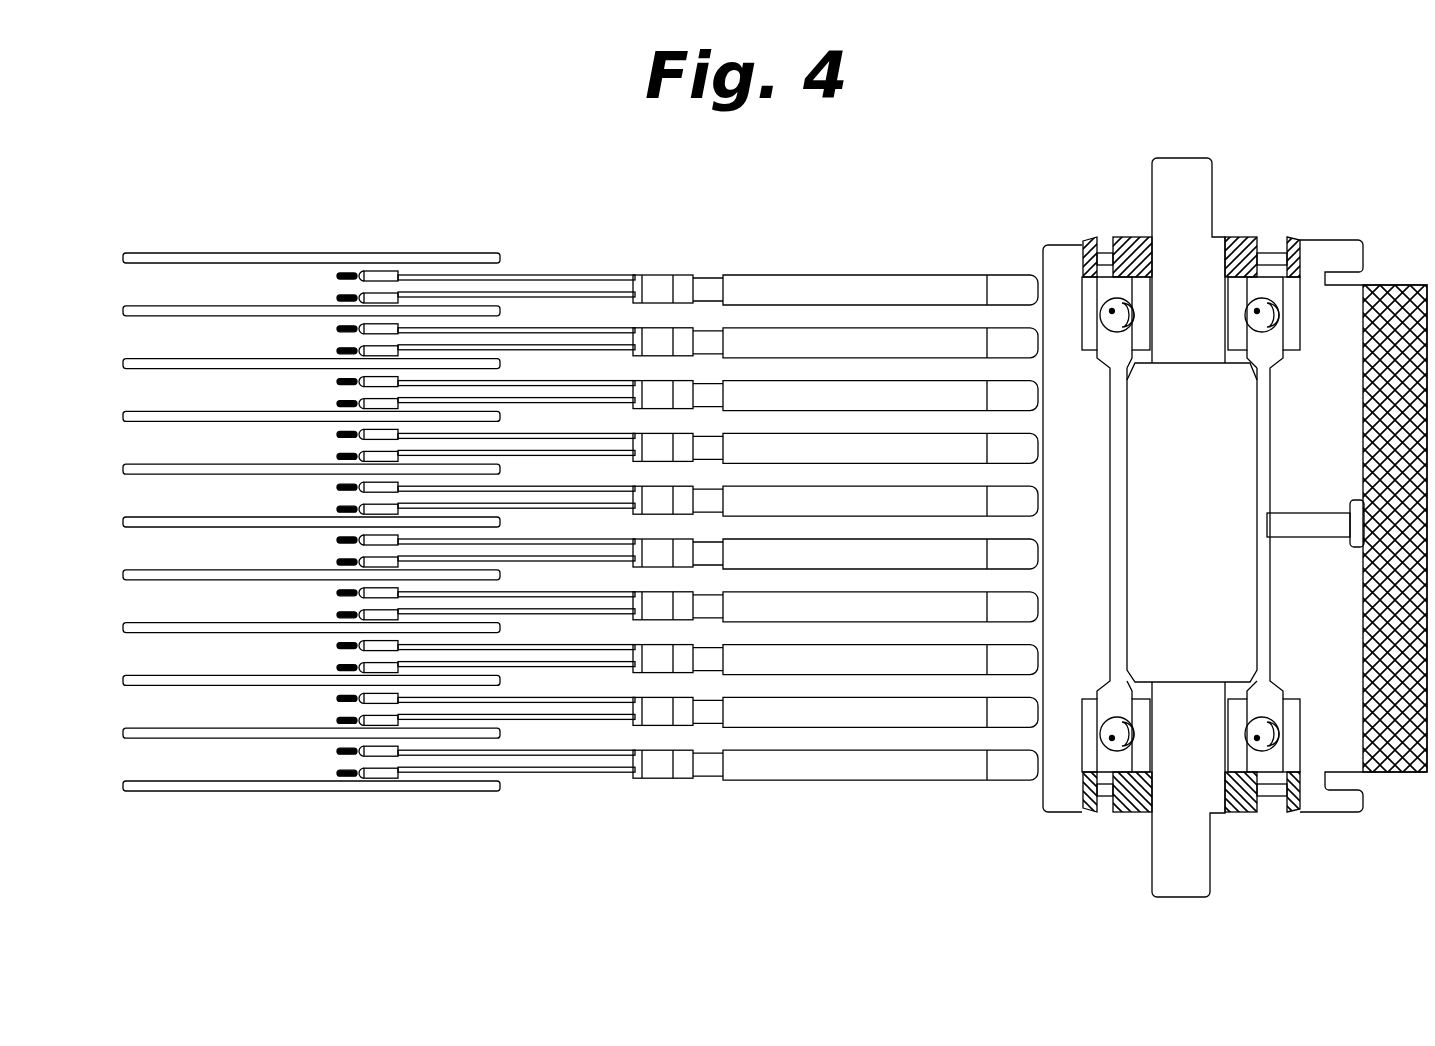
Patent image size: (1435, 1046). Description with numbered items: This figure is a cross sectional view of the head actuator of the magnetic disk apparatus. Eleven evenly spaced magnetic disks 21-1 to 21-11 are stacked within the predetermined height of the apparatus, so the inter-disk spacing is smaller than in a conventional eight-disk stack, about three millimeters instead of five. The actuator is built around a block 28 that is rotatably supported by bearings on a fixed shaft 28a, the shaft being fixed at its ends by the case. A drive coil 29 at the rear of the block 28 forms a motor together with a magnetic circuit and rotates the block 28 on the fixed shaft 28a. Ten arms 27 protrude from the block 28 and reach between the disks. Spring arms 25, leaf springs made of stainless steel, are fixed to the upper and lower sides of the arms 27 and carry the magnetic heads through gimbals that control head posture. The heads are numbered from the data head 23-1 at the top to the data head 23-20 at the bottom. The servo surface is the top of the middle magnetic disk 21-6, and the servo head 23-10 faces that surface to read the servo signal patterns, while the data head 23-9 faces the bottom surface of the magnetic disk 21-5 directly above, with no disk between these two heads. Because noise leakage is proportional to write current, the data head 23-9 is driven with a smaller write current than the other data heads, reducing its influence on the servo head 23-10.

The magnetic disk 21-1 is at (322, 236).
The magnetic disk 21-5 is at (190, 463).
The magnetic disk 21-6 is at (192, 528).
The magnetic disk 21-11 is at (466, 793).
The data head 23-1 is at (380, 255).
The data head 23-9 is at (330, 487).
The servo head 23-10 is at (332, 509).
The data head 23-20 is at (376, 783).
The spring arm 25 is at (565, 277).
The arm 27 is at (815, 284).
The block 28 is at (1057, 806).
The fixed shaft 28a is at (1163, 858).
The drive coil 29 is at (1403, 773).